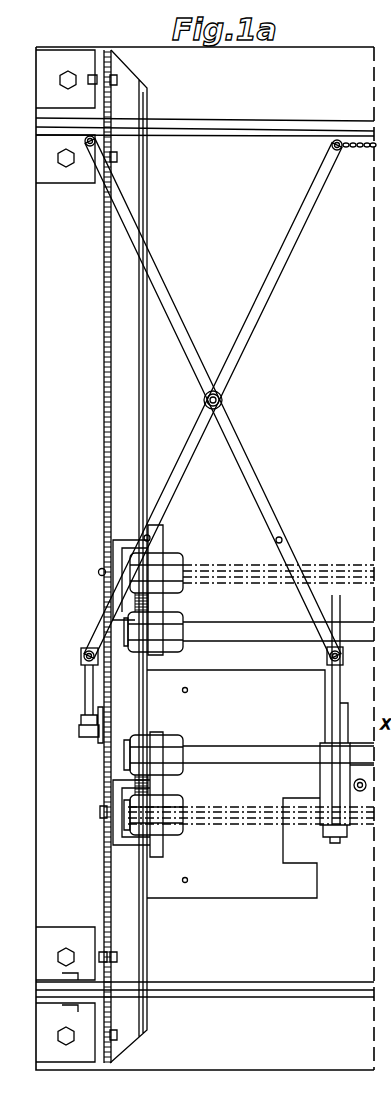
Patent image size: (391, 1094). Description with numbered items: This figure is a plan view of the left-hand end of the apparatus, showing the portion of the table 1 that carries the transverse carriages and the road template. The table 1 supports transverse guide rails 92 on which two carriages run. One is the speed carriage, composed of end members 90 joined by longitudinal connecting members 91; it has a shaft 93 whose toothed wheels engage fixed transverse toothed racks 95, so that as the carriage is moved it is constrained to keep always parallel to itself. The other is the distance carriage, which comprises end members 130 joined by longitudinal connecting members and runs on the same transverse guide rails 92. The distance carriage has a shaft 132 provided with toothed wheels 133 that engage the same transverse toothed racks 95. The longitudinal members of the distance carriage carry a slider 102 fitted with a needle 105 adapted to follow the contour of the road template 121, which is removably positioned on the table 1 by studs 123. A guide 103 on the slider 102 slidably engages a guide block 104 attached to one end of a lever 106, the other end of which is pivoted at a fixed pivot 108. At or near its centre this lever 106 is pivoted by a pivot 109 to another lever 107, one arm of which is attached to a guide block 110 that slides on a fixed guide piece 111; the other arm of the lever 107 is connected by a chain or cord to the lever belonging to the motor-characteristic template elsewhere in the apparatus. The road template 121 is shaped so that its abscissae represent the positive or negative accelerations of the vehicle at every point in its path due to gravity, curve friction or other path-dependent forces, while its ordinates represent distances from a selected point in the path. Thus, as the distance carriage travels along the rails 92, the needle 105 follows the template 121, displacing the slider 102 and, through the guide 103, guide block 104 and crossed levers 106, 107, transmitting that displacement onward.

The table 1 is at (205, 558).
The end member of speed carriage 90 is at (160, 540).
The longitudinal connecting member 91 is at (100, 570).
The transverse guide rail 92 is at (143, 405).
The shaft 93 is at (348, 575).
The transverse toothed rack 95 is at (100, 778).
The slider 102 is at (325, 775).
The guide 103 is at (327, 601).
The guide block 104 is at (327, 657).
The needle 105 is at (357, 781).
The lever 106 is at (258, 490).
The lever 107 is at (258, 308).
The pivot 108 is at (90, 147).
The pivot 109 is at (222, 400).
The guide block 110 is at (81, 653).
The fixed guide piece 111 is at (88, 693).
The road template 121 is at (278, 739).
The stud 123 is at (188, 690).
The end member of distance carriage 130 is at (160, 786).
The shaft 132 is at (365, 812).
The toothed wheel 133 is at (100, 815).